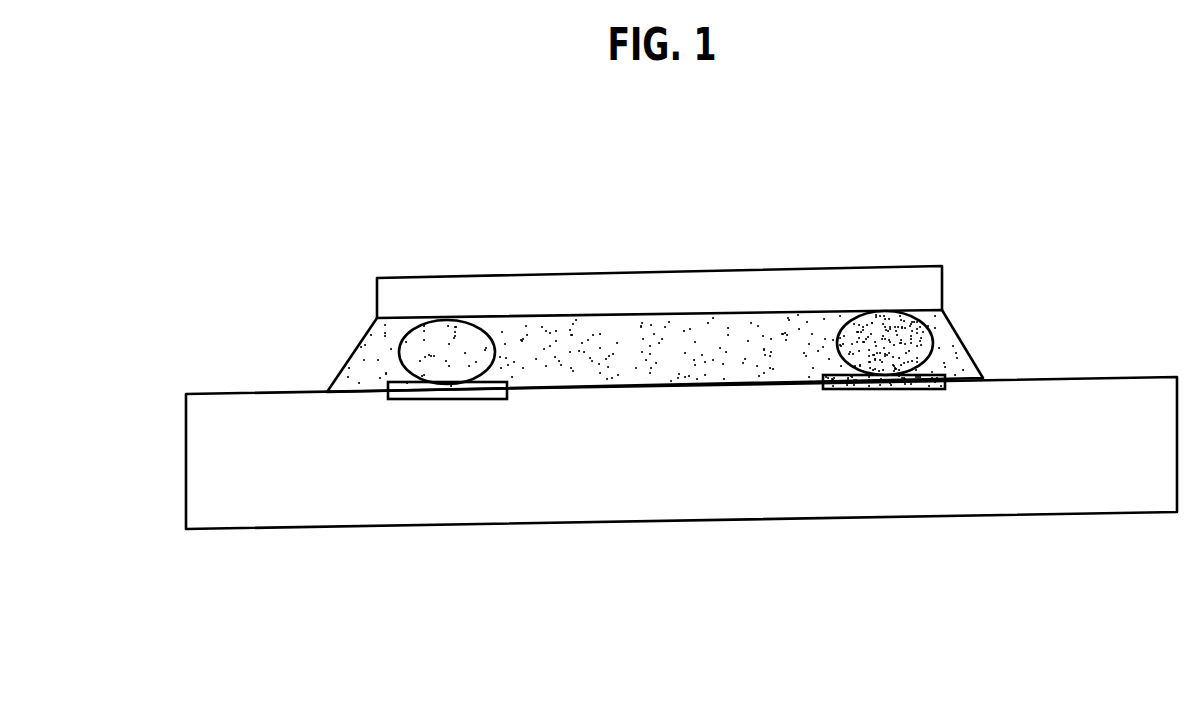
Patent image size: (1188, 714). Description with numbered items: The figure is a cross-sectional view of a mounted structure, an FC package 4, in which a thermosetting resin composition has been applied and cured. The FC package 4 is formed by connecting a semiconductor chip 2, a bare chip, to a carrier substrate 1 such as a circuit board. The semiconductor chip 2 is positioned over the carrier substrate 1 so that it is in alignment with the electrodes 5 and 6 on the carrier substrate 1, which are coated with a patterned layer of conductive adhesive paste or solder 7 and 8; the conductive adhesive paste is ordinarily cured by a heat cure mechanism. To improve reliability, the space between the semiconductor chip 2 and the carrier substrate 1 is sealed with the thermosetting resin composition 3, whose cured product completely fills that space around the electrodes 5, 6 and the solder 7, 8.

The carrier substrate 1 is at (402, 513).
The semiconductor chip 2 is at (552, 288).
The thermosetting resin composition 3 is at (748, 320).
The FC package 4 is at (1022, 196).
The electrode 5 is at (480, 400).
The electrode 6 is at (877, 388).
The conductive adhesive paste or solder 7 is at (433, 332).
The conductive adhesive paste or solder 8 is at (907, 348).